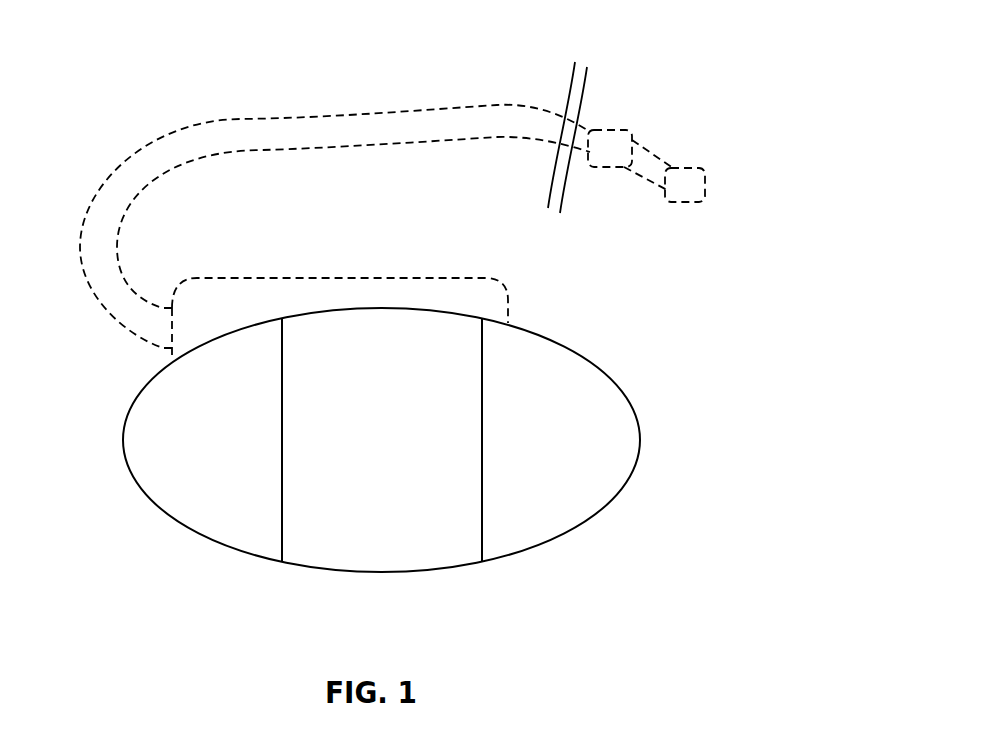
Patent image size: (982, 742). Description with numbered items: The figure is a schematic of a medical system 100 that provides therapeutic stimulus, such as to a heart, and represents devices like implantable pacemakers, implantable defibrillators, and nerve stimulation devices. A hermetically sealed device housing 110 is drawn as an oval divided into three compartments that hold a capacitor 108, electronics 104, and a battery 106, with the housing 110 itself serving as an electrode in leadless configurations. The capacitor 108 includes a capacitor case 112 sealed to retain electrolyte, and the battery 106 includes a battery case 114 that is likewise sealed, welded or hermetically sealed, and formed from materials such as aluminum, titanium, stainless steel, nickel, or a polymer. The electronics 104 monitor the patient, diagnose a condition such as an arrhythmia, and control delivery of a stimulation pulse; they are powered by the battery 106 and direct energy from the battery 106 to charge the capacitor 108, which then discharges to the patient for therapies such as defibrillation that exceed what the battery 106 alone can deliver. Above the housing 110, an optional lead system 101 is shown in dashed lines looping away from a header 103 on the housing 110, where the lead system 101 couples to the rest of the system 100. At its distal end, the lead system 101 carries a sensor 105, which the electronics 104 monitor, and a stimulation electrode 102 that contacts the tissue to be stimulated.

The system 100 is at (163, 88).
The lead system 101 is at (368, 107).
The stimulation electrode 102 is at (702, 168).
The header 103 is at (502, 293).
The electronics 104 is at (382, 513).
The sensor 105 is at (628, 130).
The battery 106 is at (555, 497).
The capacitor 108 is at (207, 490).
The housing 110 is at (593, 364).
The capacitor case 112 is at (203, 400).
The battery case 114 is at (567, 400).